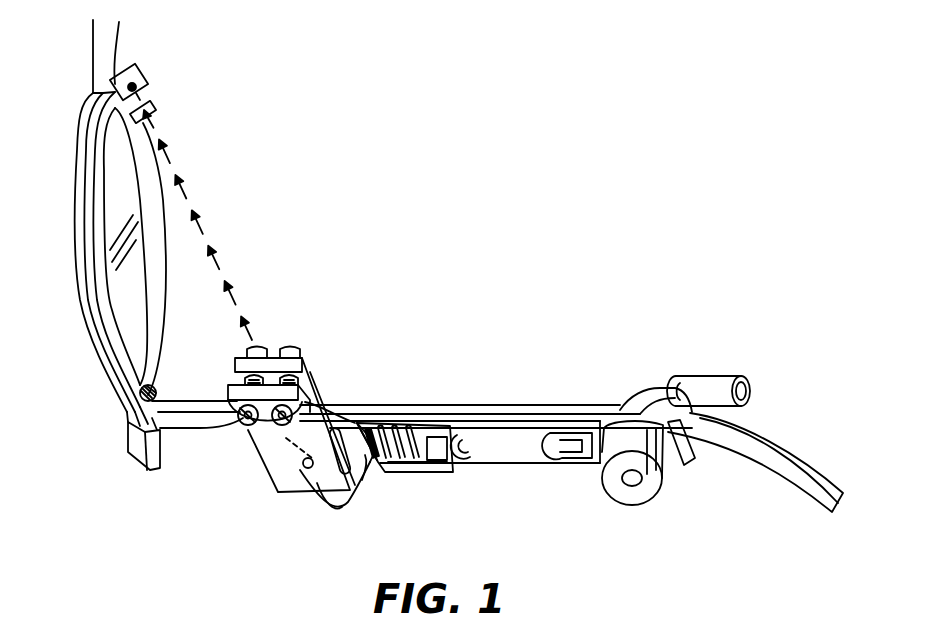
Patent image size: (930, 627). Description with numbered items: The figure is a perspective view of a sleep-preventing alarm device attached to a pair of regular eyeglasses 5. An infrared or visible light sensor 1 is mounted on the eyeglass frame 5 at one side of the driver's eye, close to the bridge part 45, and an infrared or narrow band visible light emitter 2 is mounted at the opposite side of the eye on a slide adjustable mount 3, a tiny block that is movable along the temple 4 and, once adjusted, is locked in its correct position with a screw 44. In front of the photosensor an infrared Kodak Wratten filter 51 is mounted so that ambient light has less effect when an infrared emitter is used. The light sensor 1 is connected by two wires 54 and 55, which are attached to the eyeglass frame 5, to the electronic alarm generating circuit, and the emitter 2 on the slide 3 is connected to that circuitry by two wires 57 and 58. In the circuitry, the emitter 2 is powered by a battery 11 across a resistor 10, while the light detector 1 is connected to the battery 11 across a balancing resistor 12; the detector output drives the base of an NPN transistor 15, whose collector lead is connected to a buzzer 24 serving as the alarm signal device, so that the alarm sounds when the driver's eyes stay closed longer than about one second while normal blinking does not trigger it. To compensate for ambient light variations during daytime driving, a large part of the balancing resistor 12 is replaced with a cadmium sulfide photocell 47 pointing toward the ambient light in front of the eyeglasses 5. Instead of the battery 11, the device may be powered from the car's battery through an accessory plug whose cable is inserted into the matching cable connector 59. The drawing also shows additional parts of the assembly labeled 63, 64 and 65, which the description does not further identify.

The light sensor 1 is at (137, 72).
The light emitter 2 is at (284, 490).
The slide adjustable mount 3 is at (270, 448).
The temple 4 is at (201, 421).
The eyeglass frame 5 is at (105, 348).
The resistor 10 is at (391, 460).
The battery 11 is at (506, 440).
The balancing resistor 12 is at (408, 476).
The NPN transistor 15 is at (434, 436).
The buzzer 24 is at (615, 448).
The screw 44 is at (263, 348).
The bridge part 45 is at (97, 60).
The cadmium sulfide photocell 47 is at (140, 463).
The infrared filter 51 is at (153, 107).
The wire 54 is at (80, 162).
The wire 55 is at (88, 270).
The wire 57 is at (320, 487).
The wire 58 is at (364, 482).
The cable connector 59 is at (714, 385).
The temple arm 63 is at (798, 480).
The hinge cover 64 is at (637, 416).
The cover plate 65 is at (553, 404).